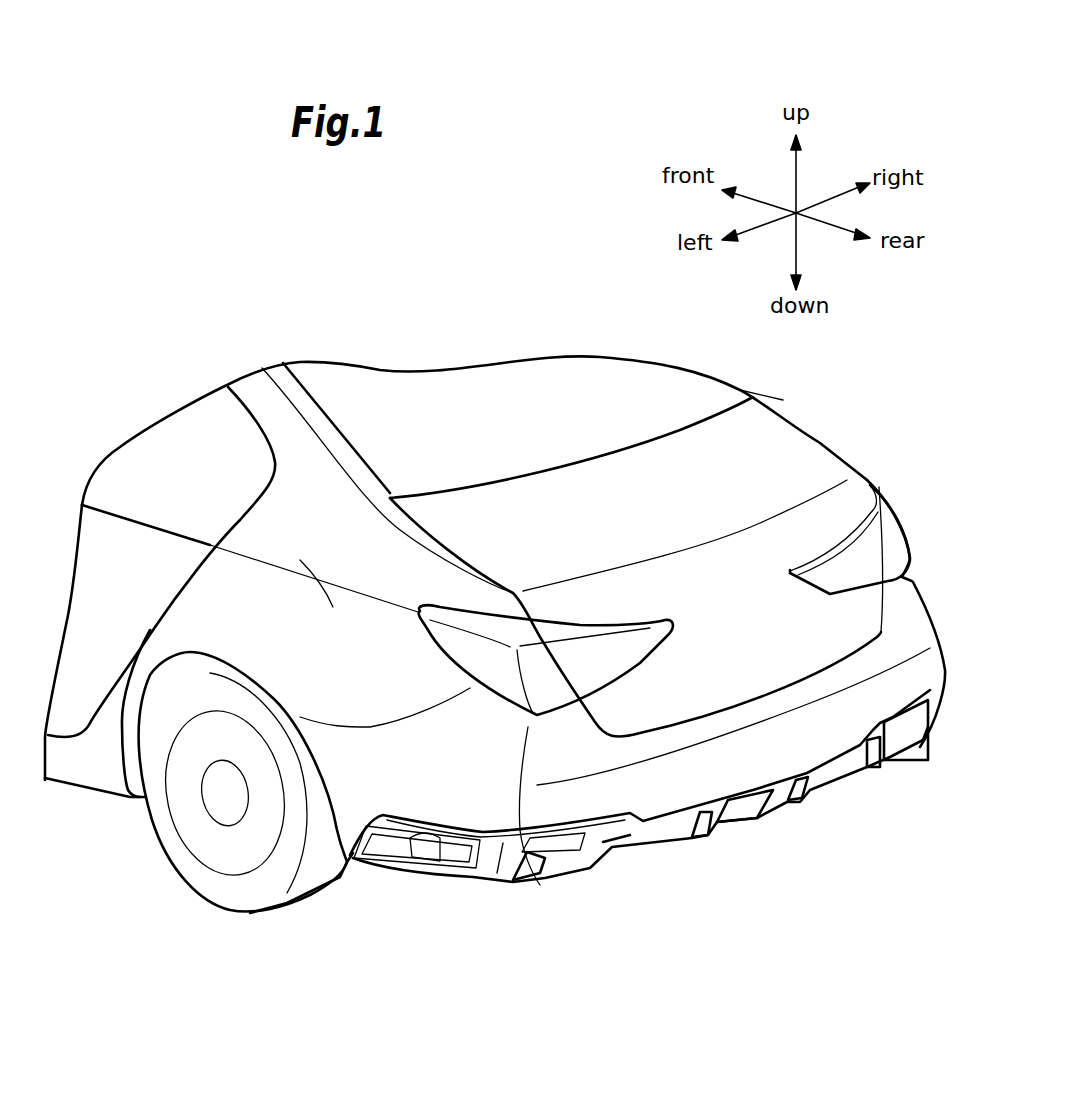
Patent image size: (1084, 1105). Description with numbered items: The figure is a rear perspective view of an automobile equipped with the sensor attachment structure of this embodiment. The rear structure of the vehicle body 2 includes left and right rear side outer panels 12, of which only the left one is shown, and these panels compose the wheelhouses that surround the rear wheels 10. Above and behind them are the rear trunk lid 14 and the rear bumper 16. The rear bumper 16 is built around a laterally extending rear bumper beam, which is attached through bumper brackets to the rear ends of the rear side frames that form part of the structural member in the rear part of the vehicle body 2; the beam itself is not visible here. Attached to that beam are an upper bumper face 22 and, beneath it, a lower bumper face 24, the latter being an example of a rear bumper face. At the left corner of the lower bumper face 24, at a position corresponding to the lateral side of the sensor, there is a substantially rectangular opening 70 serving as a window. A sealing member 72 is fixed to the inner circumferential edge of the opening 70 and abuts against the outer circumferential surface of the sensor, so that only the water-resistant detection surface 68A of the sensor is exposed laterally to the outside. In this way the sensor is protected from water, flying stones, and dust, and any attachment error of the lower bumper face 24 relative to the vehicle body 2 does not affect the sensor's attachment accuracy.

The vehicle body 2 is at (492, 800).
The rear wheel 10 is at (320, 877).
The rear side outer panel 12 is at (333, 607).
The rear trunk lid 14 is at (788, 447).
The rear bumper 16 is at (927, 602).
The upper bumper face 22 is at (893, 690).
The lower bumper face 24 is at (610, 837).
The opening 70 is at (457, 870).
The sealing member 72 is at (398, 848).
The detection surface 68A is at (430, 862).